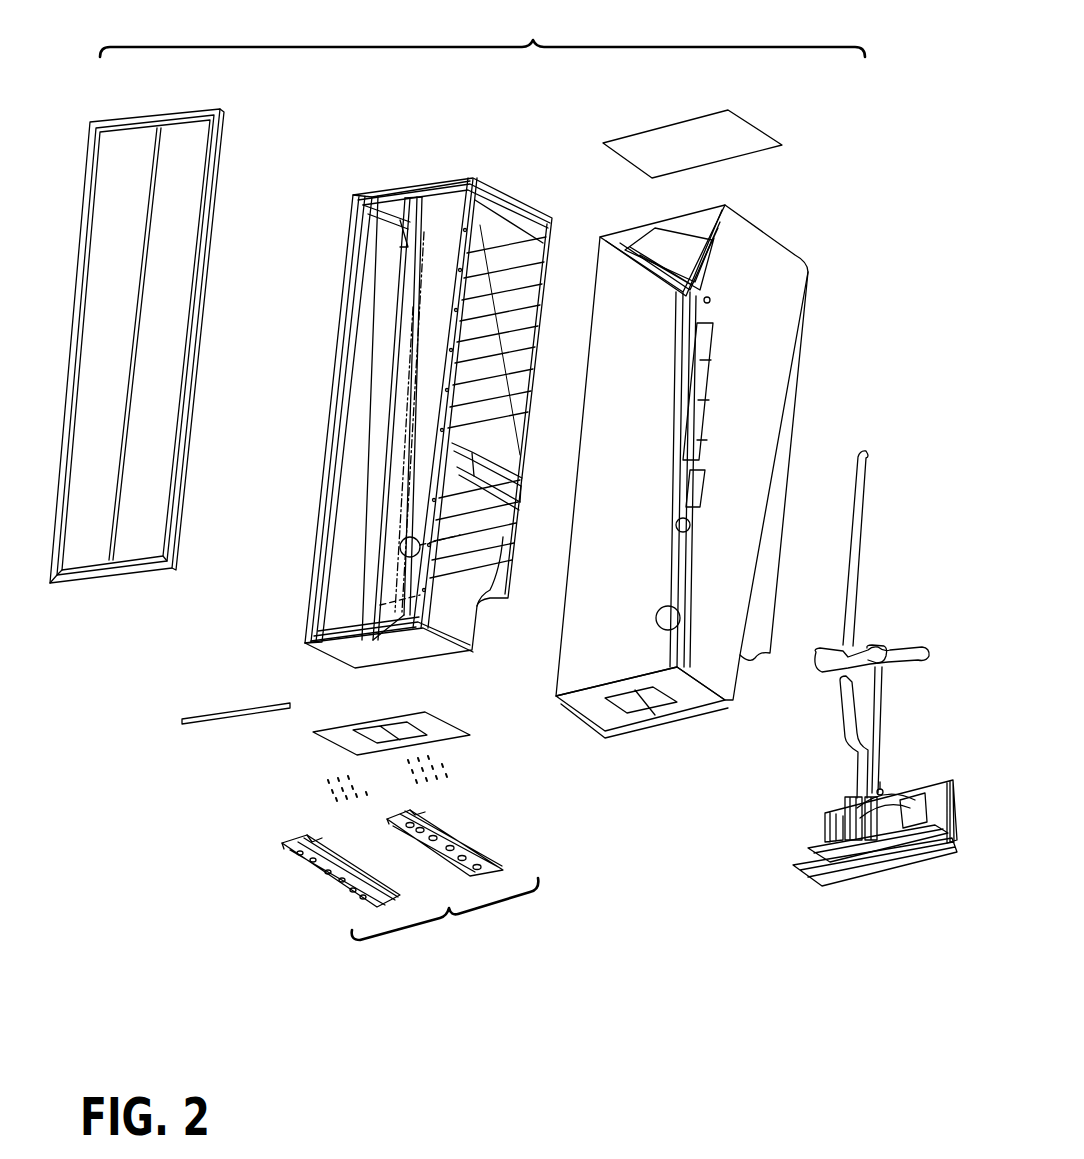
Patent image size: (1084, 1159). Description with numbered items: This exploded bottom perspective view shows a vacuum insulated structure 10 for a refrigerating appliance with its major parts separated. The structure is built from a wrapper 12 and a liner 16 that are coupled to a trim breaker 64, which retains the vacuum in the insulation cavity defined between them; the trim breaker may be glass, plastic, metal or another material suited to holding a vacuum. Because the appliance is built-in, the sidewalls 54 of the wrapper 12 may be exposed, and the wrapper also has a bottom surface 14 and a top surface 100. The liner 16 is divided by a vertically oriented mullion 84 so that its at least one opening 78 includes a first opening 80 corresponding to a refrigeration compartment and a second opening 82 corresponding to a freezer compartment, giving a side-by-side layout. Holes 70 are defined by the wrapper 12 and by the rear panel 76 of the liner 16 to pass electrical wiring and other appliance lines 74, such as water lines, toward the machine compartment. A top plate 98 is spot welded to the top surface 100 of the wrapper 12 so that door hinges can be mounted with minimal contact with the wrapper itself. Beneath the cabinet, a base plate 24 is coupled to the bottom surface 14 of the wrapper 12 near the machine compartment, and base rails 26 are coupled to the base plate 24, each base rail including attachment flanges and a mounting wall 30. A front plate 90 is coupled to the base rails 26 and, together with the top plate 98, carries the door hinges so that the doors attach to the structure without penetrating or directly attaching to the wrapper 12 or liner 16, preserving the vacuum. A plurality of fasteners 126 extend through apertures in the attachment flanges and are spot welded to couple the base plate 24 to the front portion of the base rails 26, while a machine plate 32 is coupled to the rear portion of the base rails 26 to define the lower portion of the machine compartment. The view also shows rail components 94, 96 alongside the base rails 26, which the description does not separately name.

The vacuum insulated structure 10 is at (482, 32).
The wrapper 12 is at (810, 290).
The bottom surface 14 is at (605, 740).
The liner 16 is at (528, 215).
The base plate 24 is at (330, 738).
The base rails 26 is at (445, 921).
The mounting wall 30 is at (389, 868).
The machine plate 32 is at (838, 878).
The sidewalls 54 is at (765, 405).
The trim breaker 64 is at (97, 180).
The holes 70 is at (500, 550).
The appliance lines 74 is at (860, 580).
The rear panel 76 is at (418, 636).
The opening 78 is at (316, 483).
The first opening 80 is at (450, 247).
The second opening 82 is at (345, 587).
The mullion 84 is at (407, 250).
The front plate 90 is at (205, 715).
The first rail 94 is at (320, 868).
The second rail 96 is at (465, 855).
The top plate 98 is at (688, 117).
The top surface 100 is at (678, 250).
The fasteners 126 is at (340, 788).